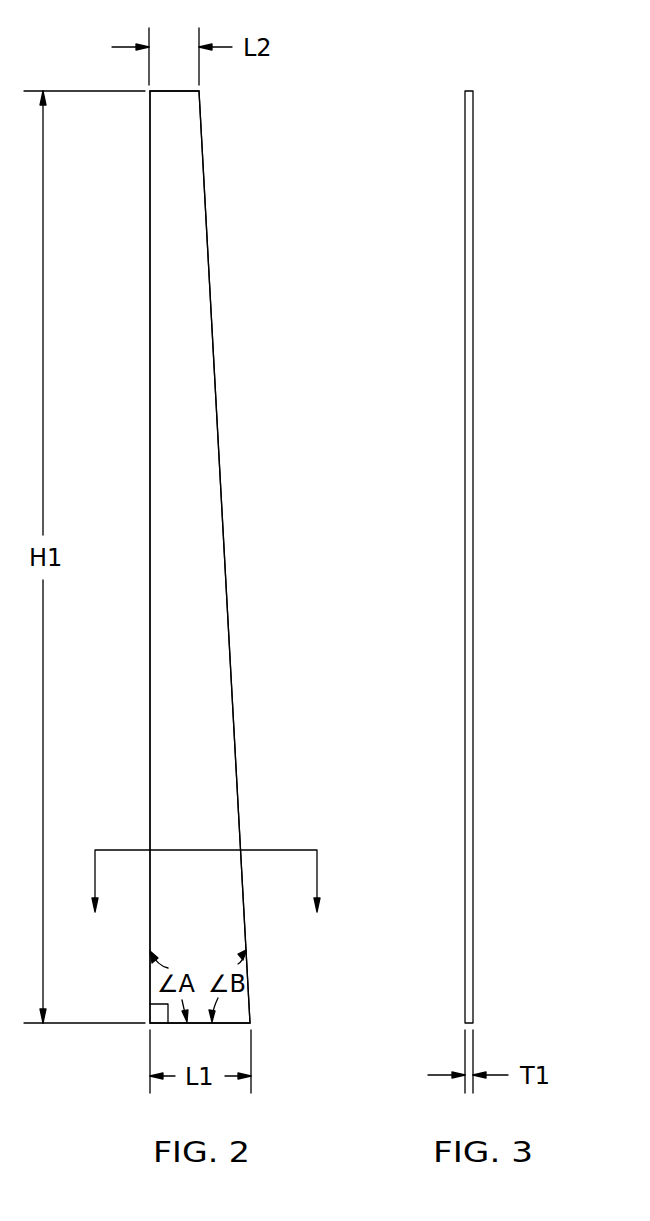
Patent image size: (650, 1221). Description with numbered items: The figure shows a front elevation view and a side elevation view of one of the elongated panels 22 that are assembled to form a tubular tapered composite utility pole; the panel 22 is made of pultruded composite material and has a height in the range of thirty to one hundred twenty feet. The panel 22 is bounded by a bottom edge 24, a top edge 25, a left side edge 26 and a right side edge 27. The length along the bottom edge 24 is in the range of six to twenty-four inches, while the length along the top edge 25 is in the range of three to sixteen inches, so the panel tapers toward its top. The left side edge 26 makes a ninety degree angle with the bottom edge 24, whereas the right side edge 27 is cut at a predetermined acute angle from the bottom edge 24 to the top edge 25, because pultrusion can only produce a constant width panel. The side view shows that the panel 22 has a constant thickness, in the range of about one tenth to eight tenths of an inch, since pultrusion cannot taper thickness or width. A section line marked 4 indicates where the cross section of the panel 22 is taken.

The panel 22 is at (252, 506).
The bottom edge 24 is at (212, 1023).
The top edge 25 is at (178, 91).
The left side edge 26 is at (150, 522).
The right side edge 27 is at (236, 715).
The section line 4- 4 is at (205, 896).